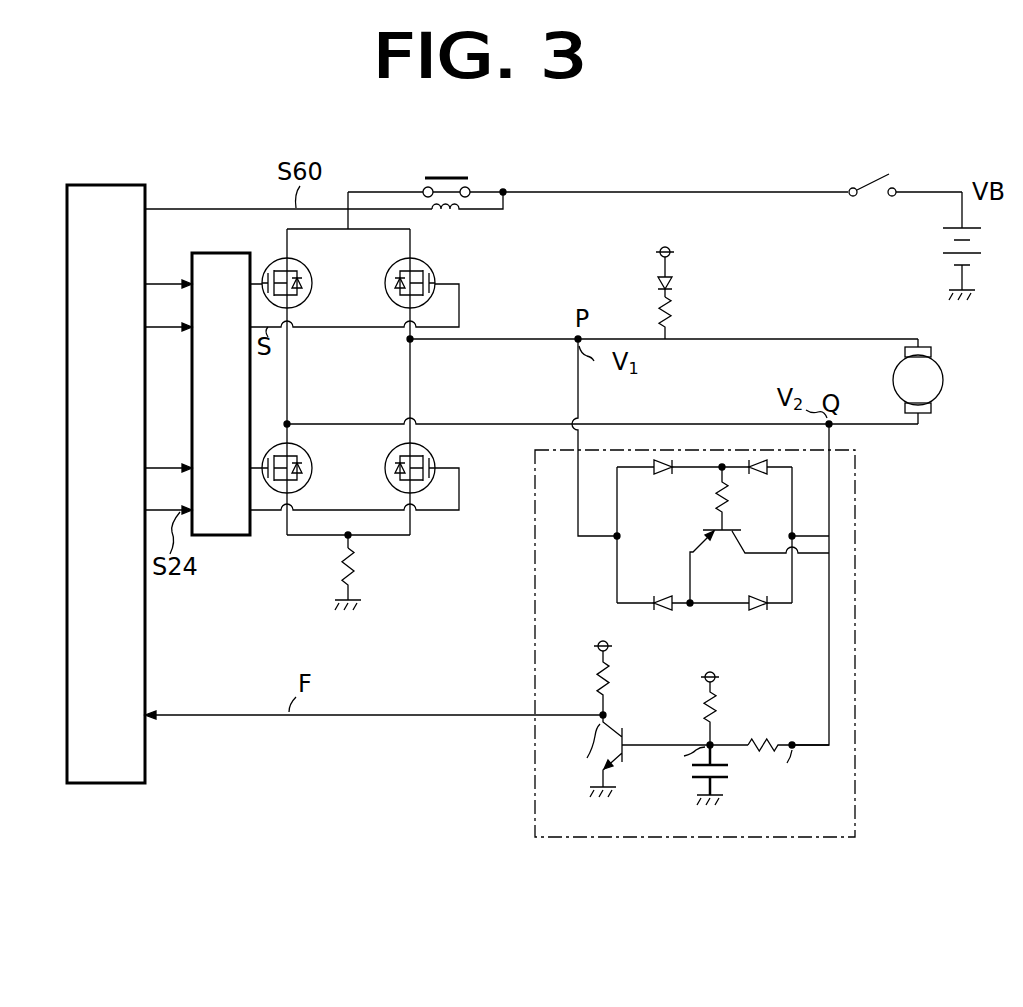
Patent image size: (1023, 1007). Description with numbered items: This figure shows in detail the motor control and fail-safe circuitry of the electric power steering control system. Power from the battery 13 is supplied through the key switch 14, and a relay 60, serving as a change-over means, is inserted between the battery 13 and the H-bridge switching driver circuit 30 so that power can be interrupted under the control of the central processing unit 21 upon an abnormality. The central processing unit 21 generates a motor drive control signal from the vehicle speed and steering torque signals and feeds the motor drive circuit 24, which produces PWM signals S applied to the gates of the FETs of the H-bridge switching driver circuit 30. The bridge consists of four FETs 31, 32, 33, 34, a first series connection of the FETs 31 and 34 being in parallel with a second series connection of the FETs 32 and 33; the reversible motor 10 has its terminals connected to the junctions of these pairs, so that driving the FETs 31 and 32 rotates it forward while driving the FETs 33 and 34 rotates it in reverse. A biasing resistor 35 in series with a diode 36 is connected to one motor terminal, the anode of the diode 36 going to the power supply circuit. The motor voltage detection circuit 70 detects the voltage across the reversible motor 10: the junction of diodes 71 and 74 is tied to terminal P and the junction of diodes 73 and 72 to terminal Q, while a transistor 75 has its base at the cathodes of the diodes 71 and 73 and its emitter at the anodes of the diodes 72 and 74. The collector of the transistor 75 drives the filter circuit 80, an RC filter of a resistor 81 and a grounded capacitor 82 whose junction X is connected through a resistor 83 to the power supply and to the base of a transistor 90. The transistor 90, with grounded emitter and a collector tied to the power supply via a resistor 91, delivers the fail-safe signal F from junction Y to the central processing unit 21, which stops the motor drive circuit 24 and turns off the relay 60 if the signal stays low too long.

The reversible motor 10 is at (945, 372).
The battery 13 is at (950, 244).
The key switch 14 is at (878, 177).
The central processing unit 21 is at (119, 185).
The motor drive circuit 24 is at (228, 253).
The H-bridge switching driver circuit 30 is at (376, 401).
The FET 31 is at (436, 283).
The FET 32 is at (312, 468).
The FET 33 is at (312, 283).
The FET 34 is at (436, 468).
The biasing resistor 35 is at (674, 319).
The diode 36 is at (674, 282).
The relay 60 is at (448, 178).
The motor voltage detection circuit 70 is at (820, 840).
The diode 71 is at (661, 475).
The diode 72 is at (762, 612).
The diode 73 is at (755, 477).
The diode 74 is at (662, 612).
The transistor 75 is at (707, 541).
The filter circuit 80 is at (740, 758).
The resistor 81 is at (768, 740).
The capacitor 82 is at (692, 780).
The resistor 83 is at (716, 718).
The transistor 90 is at (628, 734).
The resistor 91 is at (598, 682).